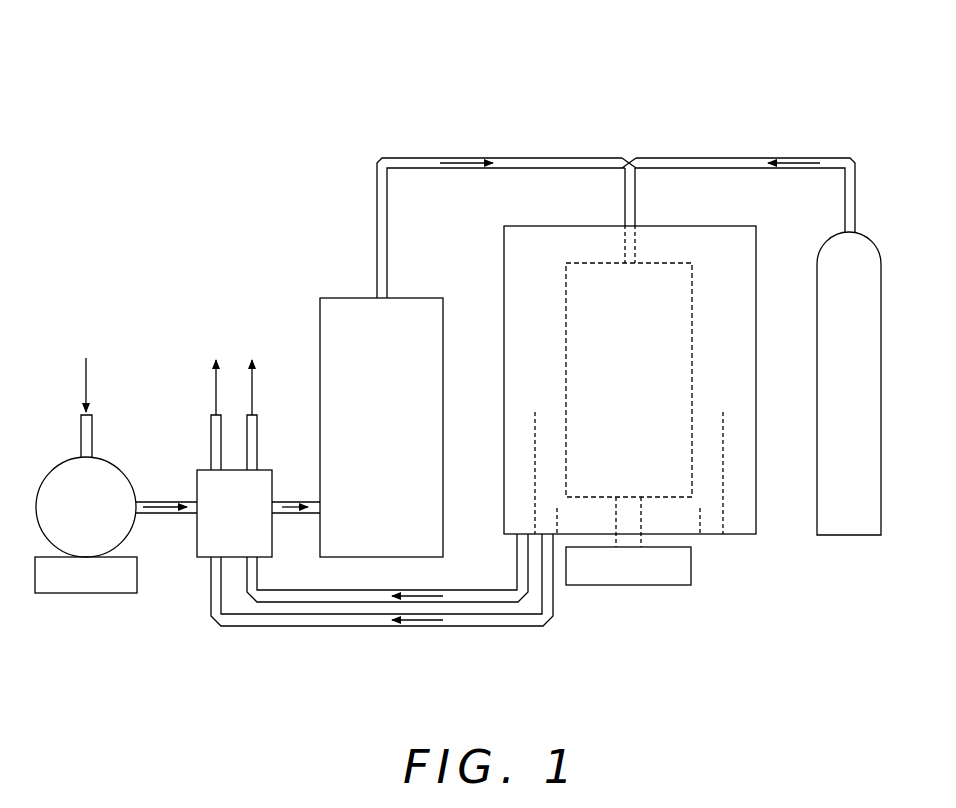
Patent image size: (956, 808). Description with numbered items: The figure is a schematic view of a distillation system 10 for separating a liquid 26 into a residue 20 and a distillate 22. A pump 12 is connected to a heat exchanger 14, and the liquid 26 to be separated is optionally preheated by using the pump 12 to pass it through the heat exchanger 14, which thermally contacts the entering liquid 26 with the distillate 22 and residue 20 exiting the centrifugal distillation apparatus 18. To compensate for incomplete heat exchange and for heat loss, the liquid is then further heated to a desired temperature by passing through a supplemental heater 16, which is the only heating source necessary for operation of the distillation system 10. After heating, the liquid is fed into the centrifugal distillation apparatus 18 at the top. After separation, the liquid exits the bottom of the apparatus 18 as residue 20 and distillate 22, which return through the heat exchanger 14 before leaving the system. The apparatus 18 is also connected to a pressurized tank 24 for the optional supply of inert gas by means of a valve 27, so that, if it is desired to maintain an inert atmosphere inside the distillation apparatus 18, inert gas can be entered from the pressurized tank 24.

The distillation system 10 is at (730, 128).
The pump 12 is at (68, 475).
The heat exchanger 14 is at (212, 493).
The supplemental heater 16 is at (335, 323).
The centrifugal distillation apparatus 18 is at (630, 405).
The residue 20 is at (216, 399).
The distillate 22 is at (256, 399).
The pressurized tank 24 is at (849, 383).
The liquid 26 is at (440, 162).
The valve 27 is at (630, 160).